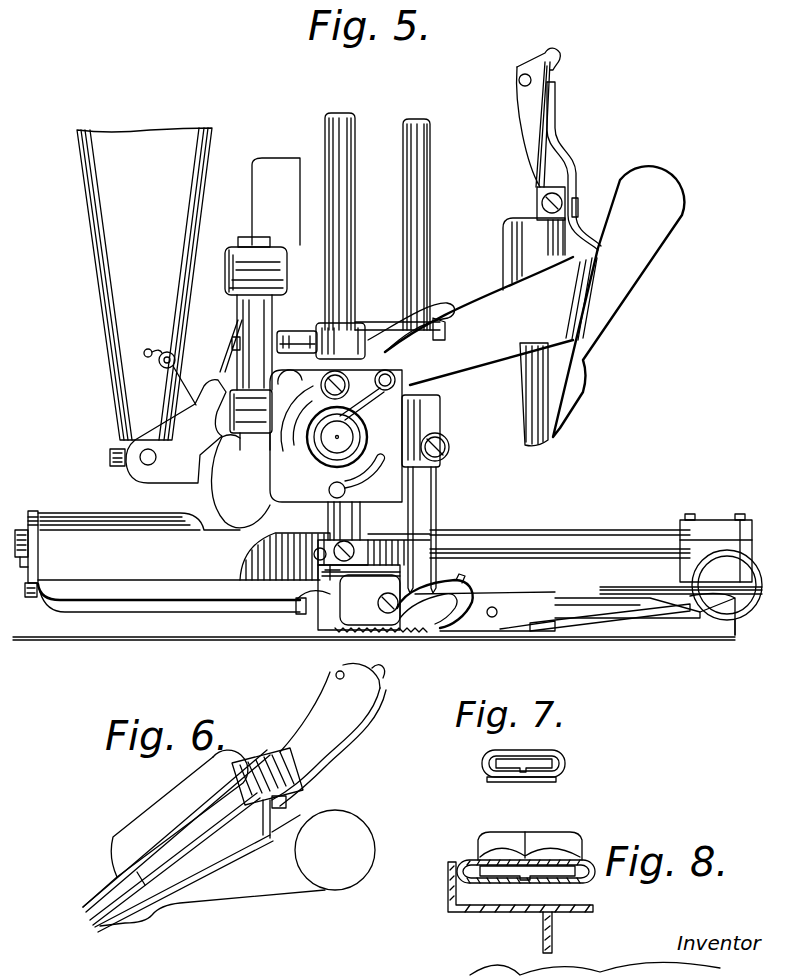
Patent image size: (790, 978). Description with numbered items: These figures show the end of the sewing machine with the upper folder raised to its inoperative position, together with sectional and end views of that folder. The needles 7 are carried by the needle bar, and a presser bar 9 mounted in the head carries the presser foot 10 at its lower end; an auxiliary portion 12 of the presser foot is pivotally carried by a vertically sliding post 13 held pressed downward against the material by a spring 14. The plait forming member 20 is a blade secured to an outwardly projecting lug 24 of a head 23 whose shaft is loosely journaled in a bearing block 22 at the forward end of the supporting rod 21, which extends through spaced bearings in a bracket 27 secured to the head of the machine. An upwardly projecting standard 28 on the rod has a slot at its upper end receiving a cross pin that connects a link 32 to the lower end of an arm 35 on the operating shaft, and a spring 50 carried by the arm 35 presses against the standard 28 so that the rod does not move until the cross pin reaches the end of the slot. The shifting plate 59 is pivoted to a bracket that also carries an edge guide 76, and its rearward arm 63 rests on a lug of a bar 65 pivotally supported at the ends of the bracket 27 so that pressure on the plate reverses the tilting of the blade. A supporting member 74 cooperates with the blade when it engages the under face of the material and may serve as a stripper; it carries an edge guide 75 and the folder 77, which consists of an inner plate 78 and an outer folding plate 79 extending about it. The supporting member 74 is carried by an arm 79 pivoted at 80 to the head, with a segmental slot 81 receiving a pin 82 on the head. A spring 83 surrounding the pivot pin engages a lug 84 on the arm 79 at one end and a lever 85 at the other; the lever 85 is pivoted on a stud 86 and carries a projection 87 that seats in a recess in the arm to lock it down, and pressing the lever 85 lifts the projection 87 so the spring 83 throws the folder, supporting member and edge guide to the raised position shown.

In FIG. 5, the needles 7 is at (413, 503).
In FIG. 5, the presser bar 9 is at (340, 165).
In FIG. 5, the presser foot 10 is at (333, 582).
In FIG. 5, the auxiliary portion 12 is at (440, 613).
In FIG. 5, the vertically sliding post 13 is at (386, 568).
In FIG. 5, the spring 14 is at (370, 565).
In FIG. 5, the plait forming member 20 is at (645, 583).
In FIG. 5, the supporting rod 21 is at (594, 532).
In FIG. 5, the bearing block 22 is at (707, 538).
In FIG. 5, the head 23 is at (736, 602).
In FIG. 5, the lug 24 is at (297, 612).
In FIG. 5, the bracket 27 is at (222, 554).
In FIG. 5, the standard 28 is at (240, 481).
In FIG. 5, the link 32 is at (168, 431).
In FIG. 5, the arm 35 is at (144, 284).
In FIG. 5, the spring 50 is at (198, 382).
In FIG. 5, the shifting plate 59 is at (590, 625).
In FIG. 5, the arm 63 is at (352, 608).
In FIG. 5, the bar 65 is at (172, 612).
In FIG. 6, the supporting member 74 is at (185, 886).
In FIG. 8, the supporting member 74 is at (480, 912).
In FIG. 5, the edge guide 75 is at (618, 301).
In FIG. 6, the edge guide 75 is at (237, 868).
In FIG. 8, the edge guide 75 is at (554, 938).
In FIG. 5, the edge guide 76 is at (566, 606).
In FIG. 5, the folder 77 is at (535, 373).
In FIG. 6, the inner plate 78 is at (171, 832).
In FIG. 7, the inner plate 78 is at (540, 763).
In FIG. 8, the inner plate 78 is at (552, 858).
In FIG. 5, the arm 79 is at (494, 310).
In FIG. 7, the arm 79 is at (484, 765).
In FIG. 8, the arm 79 is at (596, 876).
In FIG. 5, the pivot 80 is at (328, 440).
In FIG. 5, the segmental slot 81 is at (364, 440).
In FIG. 5, the pin 82 is at (330, 486).
In FIG. 5, the spring 83 is at (362, 418).
In FIG. 5, the lug 84 is at (396, 380).
In FIG. 5, the lever 85 is at (404, 328).
In FIG. 5, the stud 86 is at (352, 350).
In FIG. 5, the projection 87 is at (289, 380).